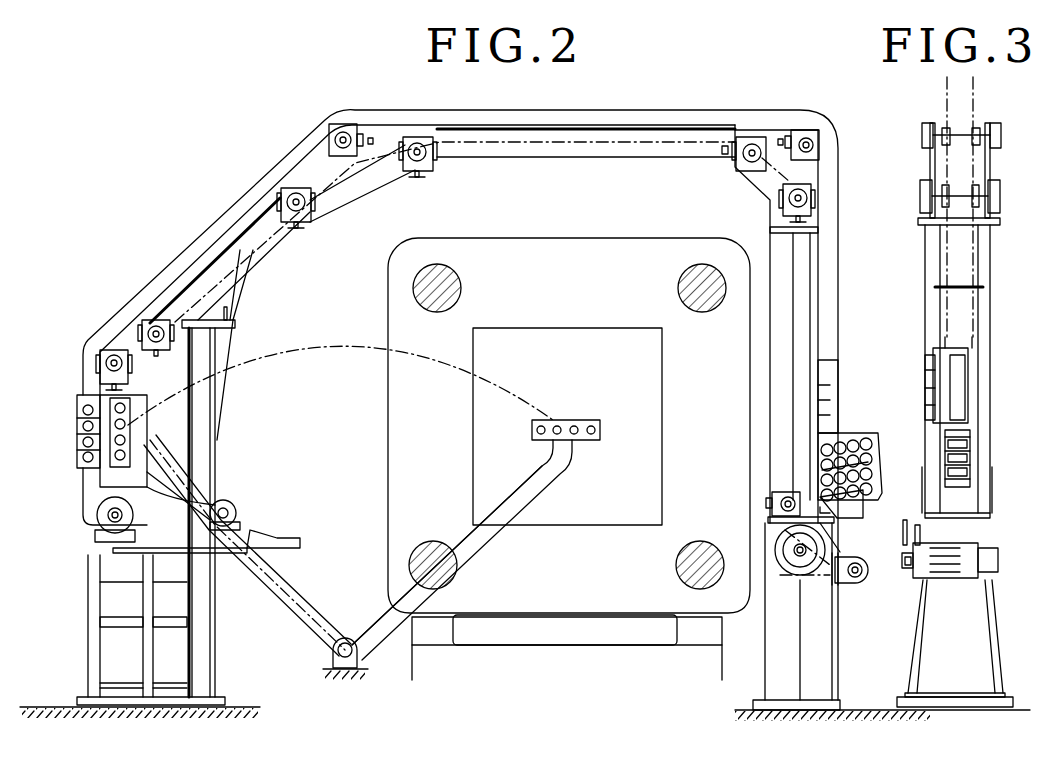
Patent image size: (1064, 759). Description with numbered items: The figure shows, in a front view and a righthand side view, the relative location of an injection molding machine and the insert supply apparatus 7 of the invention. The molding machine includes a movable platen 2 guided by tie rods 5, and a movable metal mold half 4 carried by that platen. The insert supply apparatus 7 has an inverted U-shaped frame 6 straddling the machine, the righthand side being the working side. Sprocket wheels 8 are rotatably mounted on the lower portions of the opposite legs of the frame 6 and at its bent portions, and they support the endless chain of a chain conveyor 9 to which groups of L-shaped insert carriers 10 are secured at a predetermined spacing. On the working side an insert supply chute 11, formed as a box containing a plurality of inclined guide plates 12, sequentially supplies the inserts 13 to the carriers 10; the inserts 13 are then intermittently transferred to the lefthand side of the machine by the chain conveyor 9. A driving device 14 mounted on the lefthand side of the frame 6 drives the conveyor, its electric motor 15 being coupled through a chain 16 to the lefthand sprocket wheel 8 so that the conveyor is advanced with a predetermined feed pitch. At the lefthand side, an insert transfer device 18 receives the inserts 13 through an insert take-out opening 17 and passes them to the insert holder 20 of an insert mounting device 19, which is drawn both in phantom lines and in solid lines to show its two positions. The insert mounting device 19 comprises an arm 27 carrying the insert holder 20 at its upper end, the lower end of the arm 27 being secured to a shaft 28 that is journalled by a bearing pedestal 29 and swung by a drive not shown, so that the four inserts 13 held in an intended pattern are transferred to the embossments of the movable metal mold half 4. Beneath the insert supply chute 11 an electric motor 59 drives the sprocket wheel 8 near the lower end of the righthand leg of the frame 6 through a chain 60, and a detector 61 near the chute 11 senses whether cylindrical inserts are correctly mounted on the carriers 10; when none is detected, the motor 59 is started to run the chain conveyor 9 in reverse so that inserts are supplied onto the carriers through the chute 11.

In FIG. 2, the movable platen 2 is at (612, 238).
In FIG. 2, the movable metal mold half 4 is at (543, 328).
In FIG. 2, the tie rods 5 is at (461, 288).
In FIG. 2, the inverted U-shaped frame 6 is at (636, 112).
In FIG. 3, the inverted U-shaped frame 6 is at (994, 345).
In FIG. 2, the insert supply apparatus 7 is at (545, 110).
In FIG. 3, the insert supply apparatus 7 is at (993, 258).
In FIG. 2, the sprocket wheels 8 is at (330, 135).
In FIG. 3, the sprocket wheels 8 is at (973, 118).
In FIG. 2, the chain conveyor 9 is at (820, 259).
In FIG. 2, the L-shaped insert carriers 10 is at (85, 460).
In FIG. 2, the insert supply chute 11 is at (850, 432).
In FIG. 3, the insert supply chute 11 is at (972, 449).
In FIG. 2, the inclined guide plates 12 is at (878, 443).
In FIG. 2, the inserts 13 is at (83, 410).
In FIG. 2, the driving device 14 is at (270, 536).
In FIG. 2, the electric motor 15 is at (232, 505).
In FIG. 2, the chain 16 is at (155, 495).
In FIG. 2, the insert take-out opening 17 is at (83, 427).
In FIG. 2, the insert transfer device 18 is at (78, 398).
In FIG. 2, the insert mounting device 19 is at (450, 503).
In FIG. 2, the insert holder 20 is at (580, 420).
In FIG. 2, the arm 27 is at (512, 490).
In FIG. 2, the shaft 28 is at (356, 652).
In FIG. 2, the bearing pedestal 29 is at (360, 666).
In FIG. 2, the electric motor 59 is at (862, 578).
In FIG. 2, the chain 60 is at (814, 578).
In FIG. 2, the detector 61 is at (838, 372).
In FIG. 3, the detector 61 is at (962, 389).